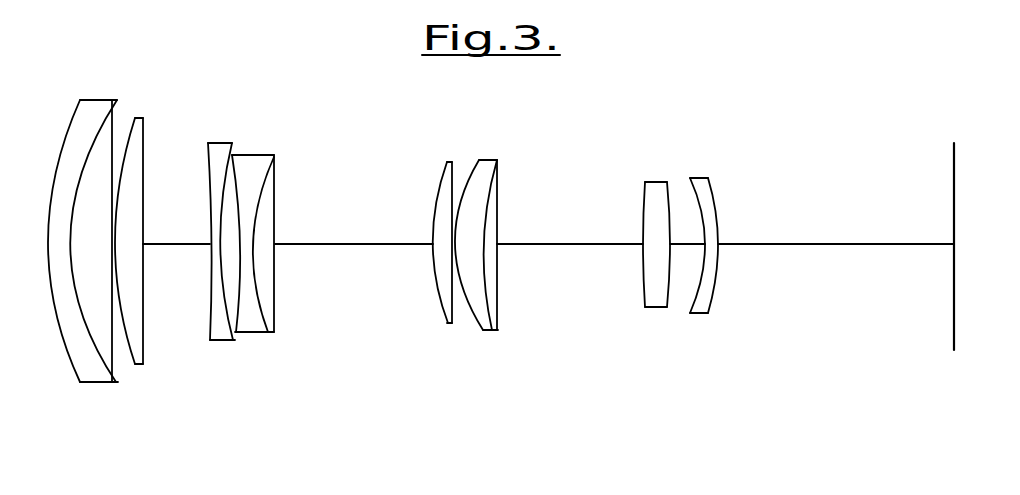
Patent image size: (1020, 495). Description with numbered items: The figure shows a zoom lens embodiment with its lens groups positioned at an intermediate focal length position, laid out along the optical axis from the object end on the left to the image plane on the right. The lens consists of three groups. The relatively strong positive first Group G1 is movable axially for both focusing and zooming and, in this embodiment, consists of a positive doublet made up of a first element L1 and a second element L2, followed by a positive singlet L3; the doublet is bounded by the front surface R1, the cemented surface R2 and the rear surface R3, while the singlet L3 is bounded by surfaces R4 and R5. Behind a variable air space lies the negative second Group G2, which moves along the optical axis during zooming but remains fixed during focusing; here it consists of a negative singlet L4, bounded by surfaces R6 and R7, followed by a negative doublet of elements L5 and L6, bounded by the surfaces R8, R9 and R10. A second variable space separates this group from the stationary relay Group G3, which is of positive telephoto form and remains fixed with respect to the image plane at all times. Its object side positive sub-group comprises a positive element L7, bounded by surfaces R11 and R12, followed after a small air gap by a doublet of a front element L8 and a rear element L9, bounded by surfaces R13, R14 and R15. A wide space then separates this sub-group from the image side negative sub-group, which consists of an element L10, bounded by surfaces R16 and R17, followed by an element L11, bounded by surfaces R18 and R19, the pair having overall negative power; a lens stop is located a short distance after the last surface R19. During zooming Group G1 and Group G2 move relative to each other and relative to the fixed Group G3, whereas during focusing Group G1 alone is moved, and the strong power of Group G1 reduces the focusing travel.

The first lens group G1 is at (140, 57).
The second lens group G2 is at (275, 107).
The third lens group G3 is at (715, 110).
The first lens element L1 is at (79, 263).
The second lens element L2 is at (121, 242).
The third lens element L3 is at (147, 235).
The fourth lens element L4 is at (201, 225).
The fifth lens element L5 is at (250, 248).
The sixth lens element L6 is at (296, 239).
The seventh lens element L7 is at (423, 246).
The eighth lens element L8 is at (483, 244).
The ninth lens element L9 is at (520, 229).
The tenth lens element L10 is at (635, 254).
The eleventh lens element L11 is at (706, 257).
The first lens surface radius R1 is at (72, 365).
The second lens surface radius R2 is at (102, 353).
The third lens surface radius R3 is at (113, 363).
The fourth lens surface radius R4 is at (140, 360).
The fifth lens surface radius R5 is at (143, 310).
The sixth lens surface radius R6 is at (210, 268).
The seventh lens surface radius R7 is at (227, 303).
The eighth lens surface radius R8 is at (243, 300).
The ninth lens surface radius R9 is at (260, 308).
The tenth lens surface radius R10 is at (275, 302).
The eleventh lens surface radius R11 is at (437, 285).
The twelfth lens surface radius R12 is at (453, 298).
The thirteenth lens surface radius R13 is at (470, 313).
The fourteenth lens surface radius R14 is at (488, 330).
The fifteenth lens surface radius R15 is at (498, 311).
The sixteenth lens surface radius R16 is at (643, 283).
The seventeenth lens surface radius R17 is at (665, 297).
The eighteenth lens surface radius R18 is at (697, 297).
The nineteenth lens surface radius R19 is at (712, 297).